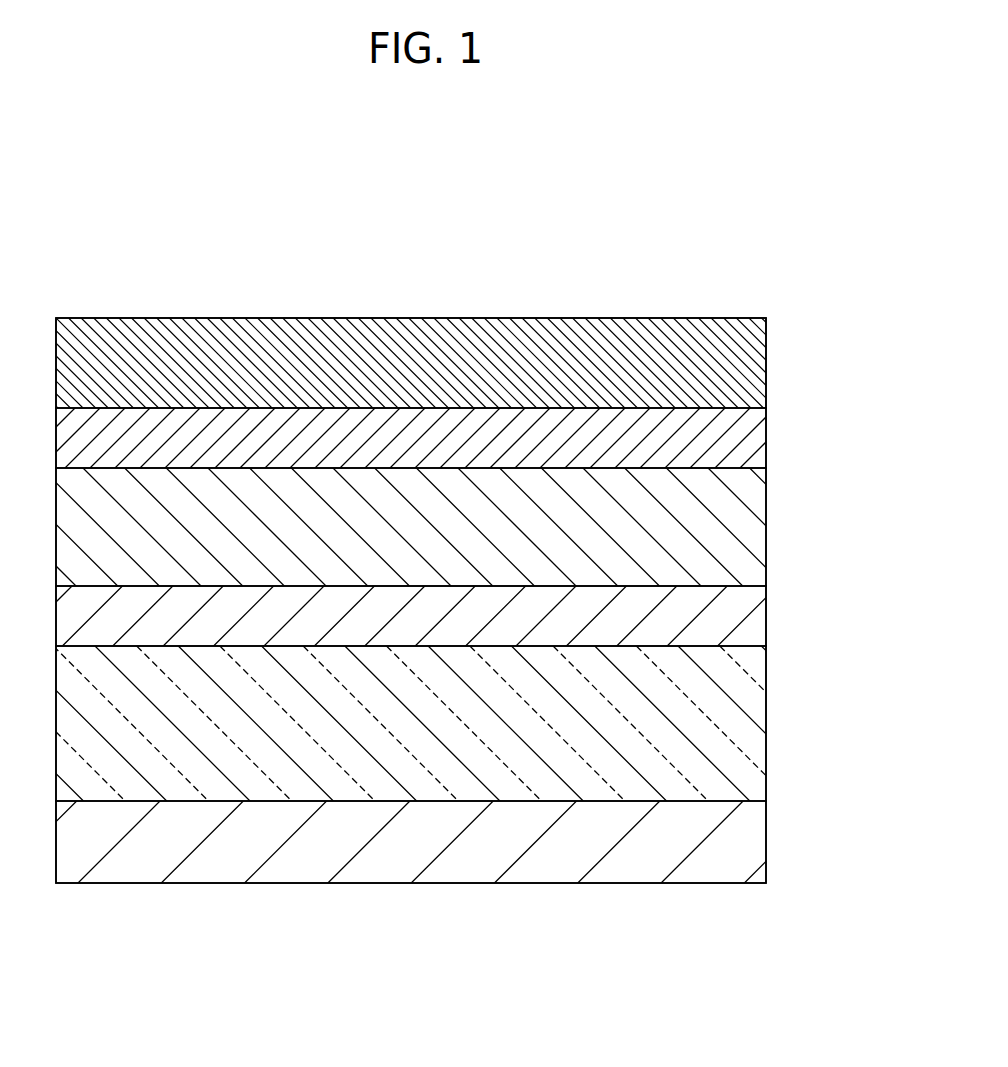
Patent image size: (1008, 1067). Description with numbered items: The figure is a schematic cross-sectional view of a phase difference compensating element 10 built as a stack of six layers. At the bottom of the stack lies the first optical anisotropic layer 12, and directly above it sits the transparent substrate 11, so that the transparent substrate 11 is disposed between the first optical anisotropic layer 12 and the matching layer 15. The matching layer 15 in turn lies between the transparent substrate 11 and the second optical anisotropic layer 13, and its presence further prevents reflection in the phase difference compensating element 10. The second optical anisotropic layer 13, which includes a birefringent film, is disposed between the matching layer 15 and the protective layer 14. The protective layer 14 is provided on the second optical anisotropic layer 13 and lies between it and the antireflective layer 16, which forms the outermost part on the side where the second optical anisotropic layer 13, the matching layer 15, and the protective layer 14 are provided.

The phase difference compensating element 10 is at (697, 281).
The transparent substrate 11 is at (752, 713).
The first optical anisotropic layer 12 is at (752, 843).
The second optical anisotropic layer 13 is at (752, 527).
The protective layer 14 is at (752, 445).
The matching layer 15 is at (752, 622).
The antireflective layer 16 is at (751, 363).